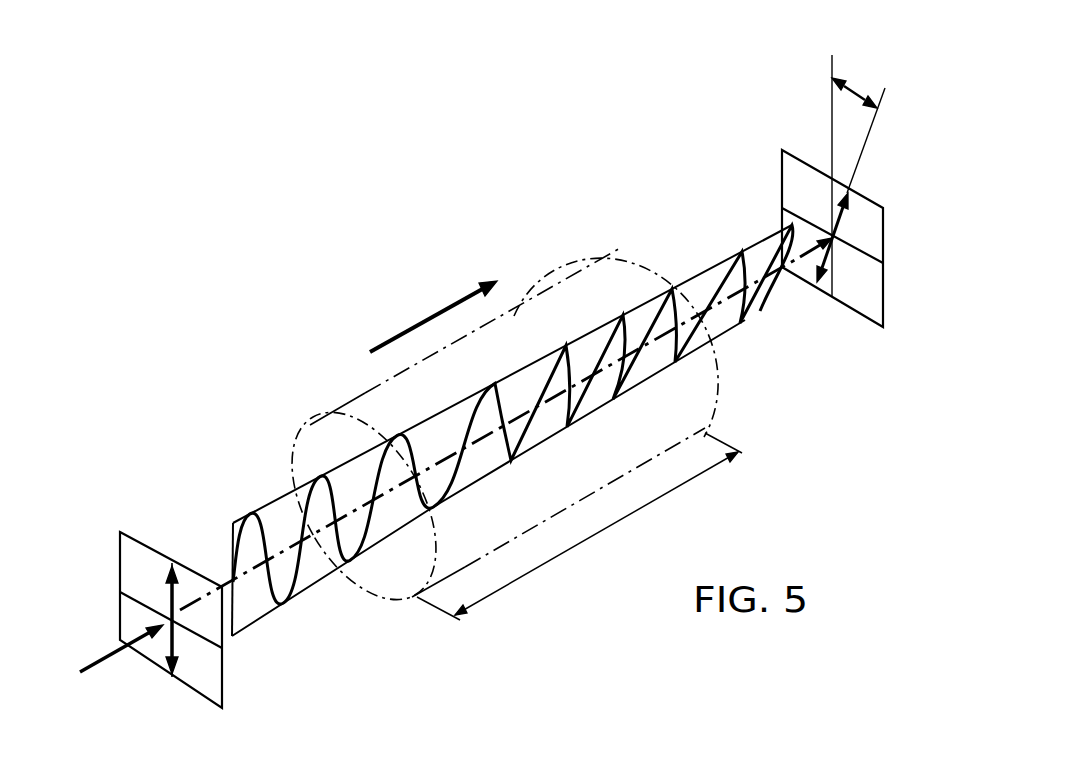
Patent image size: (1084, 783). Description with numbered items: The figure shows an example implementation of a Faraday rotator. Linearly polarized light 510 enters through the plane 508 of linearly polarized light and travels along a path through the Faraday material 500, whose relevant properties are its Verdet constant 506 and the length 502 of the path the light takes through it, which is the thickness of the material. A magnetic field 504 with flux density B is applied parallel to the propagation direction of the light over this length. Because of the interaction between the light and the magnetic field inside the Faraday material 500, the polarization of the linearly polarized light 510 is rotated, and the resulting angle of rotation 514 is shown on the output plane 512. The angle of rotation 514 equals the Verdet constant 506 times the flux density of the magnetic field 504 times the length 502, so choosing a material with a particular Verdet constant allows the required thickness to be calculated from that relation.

The Faraday material 500 is at (358, 393).
The length 502 is at (496, 572).
The magnetic field 504 is at (433, 301).
The Verdet constant 506 is at (312, 447).
The plane of linearly polarized light 508 is at (119, 566).
The linearly polarized light 510 is at (248, 515).
The plane 512 is at (886, 241).
The angle of rotation 514 is at (855, 90).